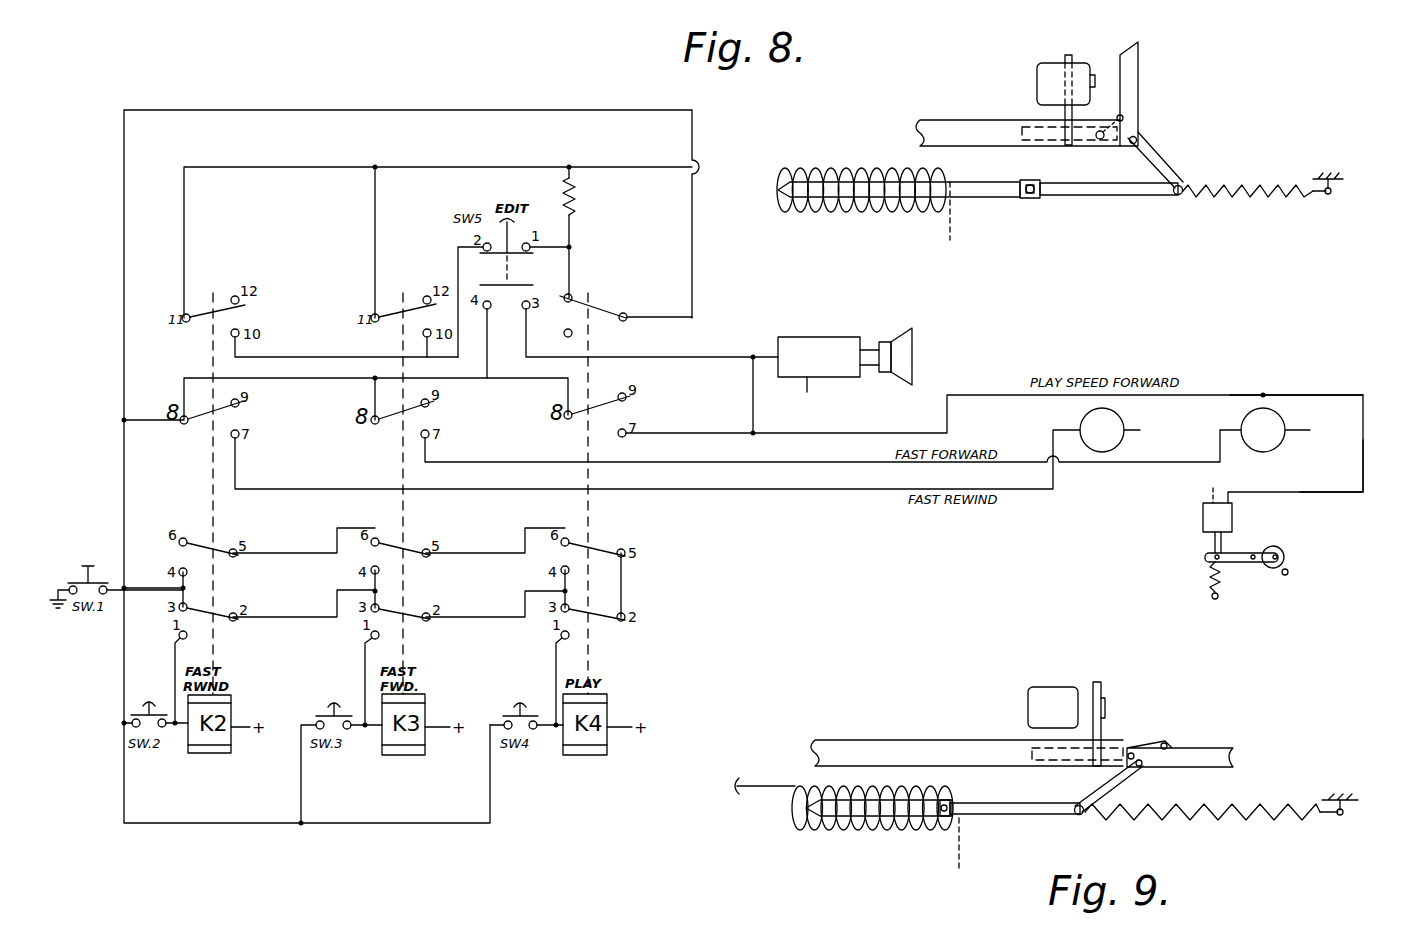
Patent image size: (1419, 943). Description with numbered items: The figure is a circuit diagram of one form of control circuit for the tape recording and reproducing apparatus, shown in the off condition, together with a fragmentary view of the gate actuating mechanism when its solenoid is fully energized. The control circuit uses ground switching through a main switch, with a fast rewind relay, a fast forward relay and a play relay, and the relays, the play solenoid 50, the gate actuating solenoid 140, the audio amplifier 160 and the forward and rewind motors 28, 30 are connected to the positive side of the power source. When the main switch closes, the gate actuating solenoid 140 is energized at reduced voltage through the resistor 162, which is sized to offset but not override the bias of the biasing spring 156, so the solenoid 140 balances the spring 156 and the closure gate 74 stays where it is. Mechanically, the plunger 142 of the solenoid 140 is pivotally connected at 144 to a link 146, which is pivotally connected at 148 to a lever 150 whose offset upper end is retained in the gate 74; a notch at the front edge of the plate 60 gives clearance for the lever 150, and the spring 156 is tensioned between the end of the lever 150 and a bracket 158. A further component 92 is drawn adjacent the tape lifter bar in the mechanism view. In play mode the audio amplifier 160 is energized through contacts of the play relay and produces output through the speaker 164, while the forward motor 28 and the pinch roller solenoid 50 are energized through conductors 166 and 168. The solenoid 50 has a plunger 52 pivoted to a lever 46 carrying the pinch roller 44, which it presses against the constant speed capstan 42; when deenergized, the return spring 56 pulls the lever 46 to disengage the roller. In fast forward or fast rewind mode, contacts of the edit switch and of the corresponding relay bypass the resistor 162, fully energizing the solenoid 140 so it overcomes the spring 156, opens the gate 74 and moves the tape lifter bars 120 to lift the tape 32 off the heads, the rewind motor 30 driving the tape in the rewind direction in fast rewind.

In FIG. 8, the forward motor 28 is at (1270, 451).
In FIG. 8, the rewind motor 30 is at (1080, 421).
In FIG. 8, the magnetic recording tape 32 is at (1095, 76).
In FIG. 9, the magnetic recording tape 32 is at (1107, 712).
In FIG. 8, the constant speed capstan 42 is at (1288, 577).
In FIG. 8, the pinch roller 44 is at (1285, 553).
In FIG. 8, the lever 46 is at (1242, 553).
In FIG. 8, the play solenoid 50 is at (1203, 512).
In FIG. 8, the plunger 52 is at (1212, 543).
In FIG. 8, the return spring 56 is at (1210, 576).
In FIG. 8, the plate 60 is at (935, 120).
In FIG. 9, the plate 60 is at (895, 740).
In FIG. 8, the closure gate 74 is at (1138, 78).
In FIG. 9, the closure gate 74 is at (1200, 748).
In FIG. 8, the solenoid 92 is at (1037, 75).
In FIG. 9, the solenoid 92 is at (1028, 704).
In FIG. 8, the tape lifter bars 120 is at (1065, 112).
In FIG. 9, the tape lifter bars 120 is at (1103, 689).
In FIG. 8, the gate actuating solenoid 140 is at (852, 168).
In FIG. 9, the gate actuating solenoid 140 is at (912, 830).
In FIG. 8, the plunger 142 is at (990, 199).
In FIG. 9, the plunger 142 is at (930, 818).
In FIG. 8, the pivotal connection 144 is at (1035, 199).
In FIG. 8, the link 146 is at (1120, 196).
In FIG. 9, the link 146 is at (1025, 815).
In FIG. 8, the pivotal connection 148 is at (1178, 196).
In FIG. 9, the pivotal connection 148 is at (1079, 805).
In FIG. 8, the lever 150 is at (1150, 165).
In FIG. 9, the lever 150 is at (1115, 797).
In FIG. 8, the biasing spring 156 is at (1242, 197).
In FIG. 9, the biasing spring 156 is at (1238, 822).
In FIG. 8, the bracket 158 is at (1329, 195).
In FIG. 8, the audio amplifier 160 is at (815, 337).
In FIG. 8, the resistor 162 is at (578, 200).
In FIG. 8, the speaker 164 is at (912, 340).
In FIG. 8, the conductor 166 is at (1263, 395).
In FIG. 8, the conductor 168 is at (1363, 472).